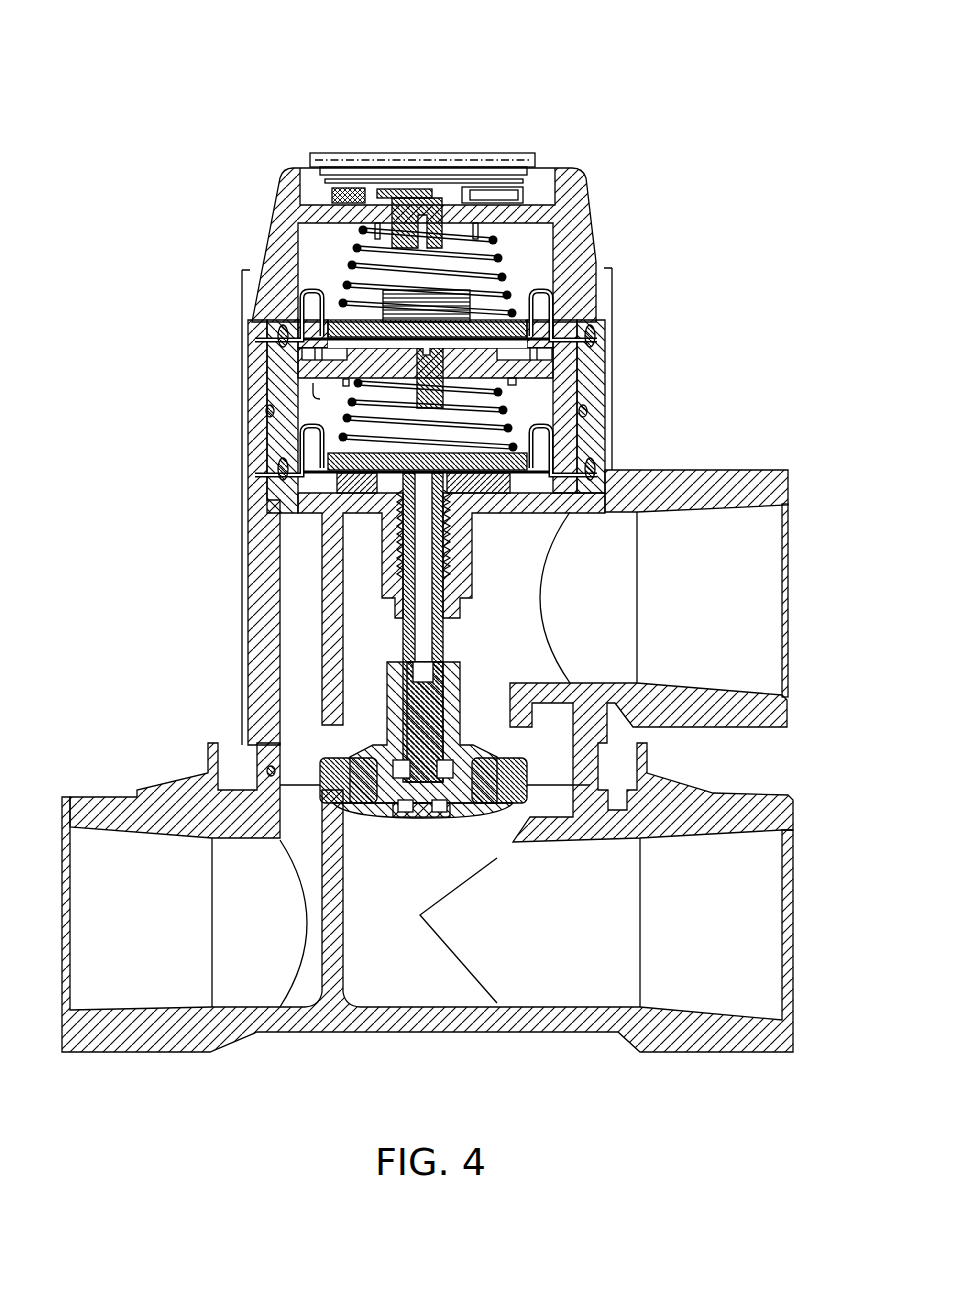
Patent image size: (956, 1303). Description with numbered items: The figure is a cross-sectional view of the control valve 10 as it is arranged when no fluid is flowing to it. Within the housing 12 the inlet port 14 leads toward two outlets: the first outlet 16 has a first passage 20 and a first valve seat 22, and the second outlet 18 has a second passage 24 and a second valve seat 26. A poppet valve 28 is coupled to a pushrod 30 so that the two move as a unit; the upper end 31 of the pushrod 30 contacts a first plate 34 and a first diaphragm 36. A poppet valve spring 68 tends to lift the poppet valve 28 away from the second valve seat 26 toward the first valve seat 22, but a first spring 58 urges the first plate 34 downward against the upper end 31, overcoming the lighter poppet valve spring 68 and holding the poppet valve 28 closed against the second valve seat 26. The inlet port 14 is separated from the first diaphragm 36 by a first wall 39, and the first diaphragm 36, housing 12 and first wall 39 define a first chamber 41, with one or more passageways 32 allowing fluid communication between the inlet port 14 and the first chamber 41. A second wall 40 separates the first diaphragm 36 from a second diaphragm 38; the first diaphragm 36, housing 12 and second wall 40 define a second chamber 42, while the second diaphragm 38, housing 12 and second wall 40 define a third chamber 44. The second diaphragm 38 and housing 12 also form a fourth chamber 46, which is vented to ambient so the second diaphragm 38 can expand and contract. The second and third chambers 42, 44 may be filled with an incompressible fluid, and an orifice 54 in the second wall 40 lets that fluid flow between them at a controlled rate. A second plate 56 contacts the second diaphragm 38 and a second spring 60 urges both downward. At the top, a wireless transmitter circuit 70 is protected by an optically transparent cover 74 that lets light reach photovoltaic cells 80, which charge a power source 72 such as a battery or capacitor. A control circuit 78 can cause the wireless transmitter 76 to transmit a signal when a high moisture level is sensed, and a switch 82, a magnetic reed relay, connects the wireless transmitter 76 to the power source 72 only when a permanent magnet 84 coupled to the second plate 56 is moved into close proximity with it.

The control valve 10 is at (712, 170).
The housing 12 is at (248, 585).
The inlet port 14 is at (80, 797).
The first outlet 16 is at (752, 470).
The second outlet 18 is at (760, 1053).
The first passage 20 is at (594, 614).
The first valve seat 22 is at (510, 722).
The second passage 24 is at (586, 946).
The second valve seat 26 is at (500, 817).
The poppet valve 28 is at (368, 818).
The pushrod 30 is at (403, 642).
The upper end 31 is at (508, 480).
The passageways 32 is at (312, 482).
The first plate 34 is at (335, 440).
The first diaphragm 36 is at (540, 452).
The second diaphragm 38 is at (562, 312).
The first wall 39 is at (315, 470).
The second wall 40 is at (286, 342).
The first chamber 41 is at (546, 493).
The second chamber 42 is at (544, 416).
The third chamber 44 is at (550, 359).
The fourth chamber 46 is at (540, 269).
The orifice 54 is at (314, 402).
The second plate 56 is at (317, 296).
The first spring 58 is at (525, 398).
The second spring 60 is at (500, 250).
The poppet valve spring 68 is at (450, 542).
The wireless transmitter circuit 70 is at (528, 92).
The power source 72 is at (332, 196).
The optically transparent cover 74 is at (323, 157).
The wireless transmitter 76 is at (360, 183).
The control circuit 78 is at (390, 189).
The photovoltaic cells 80 is at (443, 181).
The switch 82 is at (523, 196).
The permanent magnet 84 is at (400, 292).